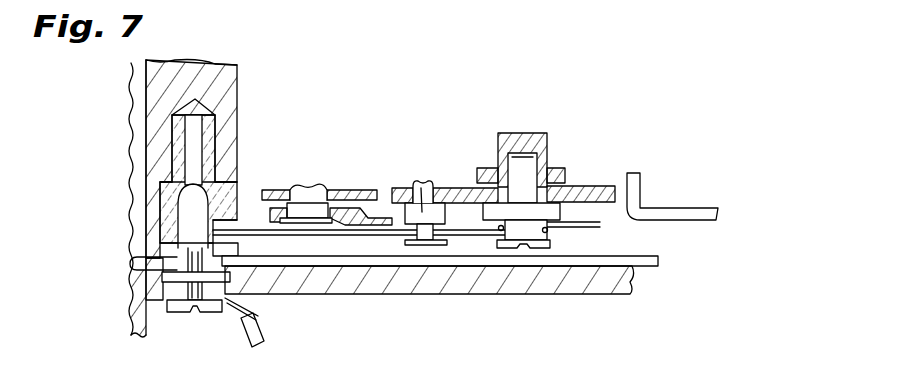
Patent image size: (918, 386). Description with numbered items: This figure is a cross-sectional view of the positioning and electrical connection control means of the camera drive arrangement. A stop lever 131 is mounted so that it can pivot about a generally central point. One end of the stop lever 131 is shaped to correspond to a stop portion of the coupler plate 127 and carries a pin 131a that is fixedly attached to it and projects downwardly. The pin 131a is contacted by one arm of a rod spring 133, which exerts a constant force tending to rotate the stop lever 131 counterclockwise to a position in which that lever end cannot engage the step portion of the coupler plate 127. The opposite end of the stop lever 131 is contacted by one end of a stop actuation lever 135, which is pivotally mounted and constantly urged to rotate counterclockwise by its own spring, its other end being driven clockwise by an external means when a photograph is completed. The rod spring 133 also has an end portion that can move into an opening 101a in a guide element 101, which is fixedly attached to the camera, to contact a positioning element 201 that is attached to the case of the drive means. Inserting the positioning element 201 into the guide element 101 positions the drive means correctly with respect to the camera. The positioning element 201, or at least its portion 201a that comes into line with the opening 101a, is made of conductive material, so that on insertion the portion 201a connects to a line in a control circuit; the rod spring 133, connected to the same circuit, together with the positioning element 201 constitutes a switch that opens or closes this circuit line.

The guide element 101 is at (238, 200).
The opening 101a is at (240, 226).
The coupler plate 127 is at (352, 188).
The stop lever 131 is at (447, 187).
The pin 131a is at (420, 184).
The rod spring 133 is at (463, 225).
The stop actuation lever 135 is at (633, 187).
The positioning element 201 is at (192, 230).
The conductive portion 201a is at (137, 265).